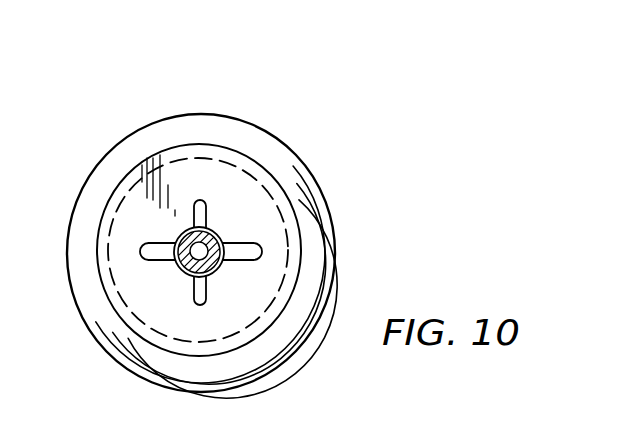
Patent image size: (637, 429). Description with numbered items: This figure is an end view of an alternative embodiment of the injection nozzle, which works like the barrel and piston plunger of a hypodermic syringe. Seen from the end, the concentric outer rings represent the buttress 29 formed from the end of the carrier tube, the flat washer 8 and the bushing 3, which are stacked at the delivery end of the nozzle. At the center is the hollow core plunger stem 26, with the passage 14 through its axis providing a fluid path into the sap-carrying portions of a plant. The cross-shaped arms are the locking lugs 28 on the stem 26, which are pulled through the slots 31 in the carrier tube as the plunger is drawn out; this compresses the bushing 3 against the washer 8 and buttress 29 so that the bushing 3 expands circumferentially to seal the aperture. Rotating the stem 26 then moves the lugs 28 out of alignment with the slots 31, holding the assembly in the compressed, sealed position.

The buttress 29 is at (184, 131).
The flat washer 8 is at (253, 286).
The bushing 3 is at (293, 252).
The locking lug 28 is at (199, 211).
The hollow core plunger stem 26 is at (185, 277).
The slot 31 is at (162, 243).
The passage 14 is at (204, 262).